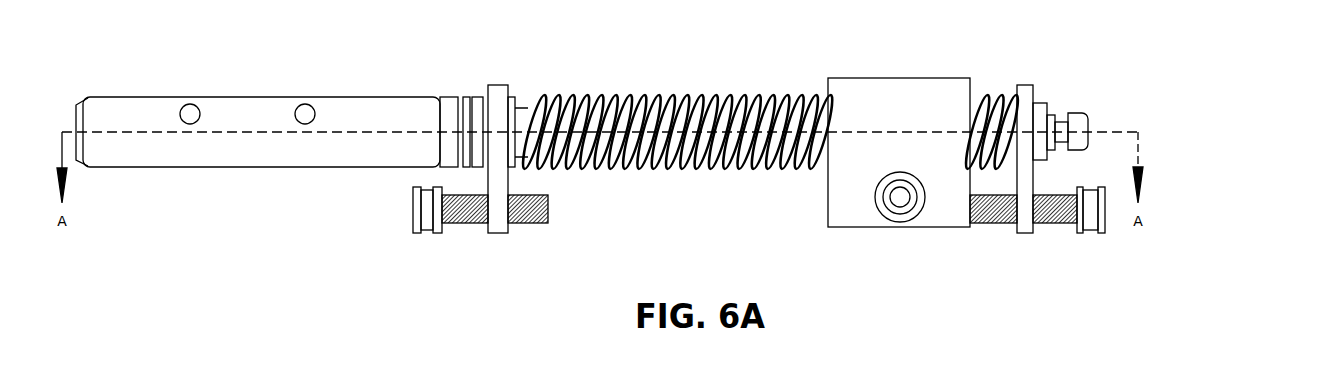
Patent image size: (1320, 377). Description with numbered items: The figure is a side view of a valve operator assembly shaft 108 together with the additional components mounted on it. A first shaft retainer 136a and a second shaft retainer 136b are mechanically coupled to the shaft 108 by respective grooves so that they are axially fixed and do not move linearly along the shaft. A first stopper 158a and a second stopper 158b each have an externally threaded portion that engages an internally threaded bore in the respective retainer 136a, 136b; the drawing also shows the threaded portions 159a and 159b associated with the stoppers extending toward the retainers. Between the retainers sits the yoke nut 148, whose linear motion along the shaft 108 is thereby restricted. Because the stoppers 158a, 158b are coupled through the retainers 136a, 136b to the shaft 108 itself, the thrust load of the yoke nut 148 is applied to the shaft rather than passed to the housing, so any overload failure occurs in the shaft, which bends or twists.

The valve operator assembly shaft 108 is at (757, 95).
The first shaft retainer 136a is at (500, 85).
The second shaft retainer 136b is at (1035, 82).
The yoke nut 148 is at (967, 228).
The first stopper 158a is at (405, 228).
The second stopper 158b is at (1112, 180).
The first threaded rod 159a is at (513, 226).
The second threaded rod 159b is at (1042, 227).